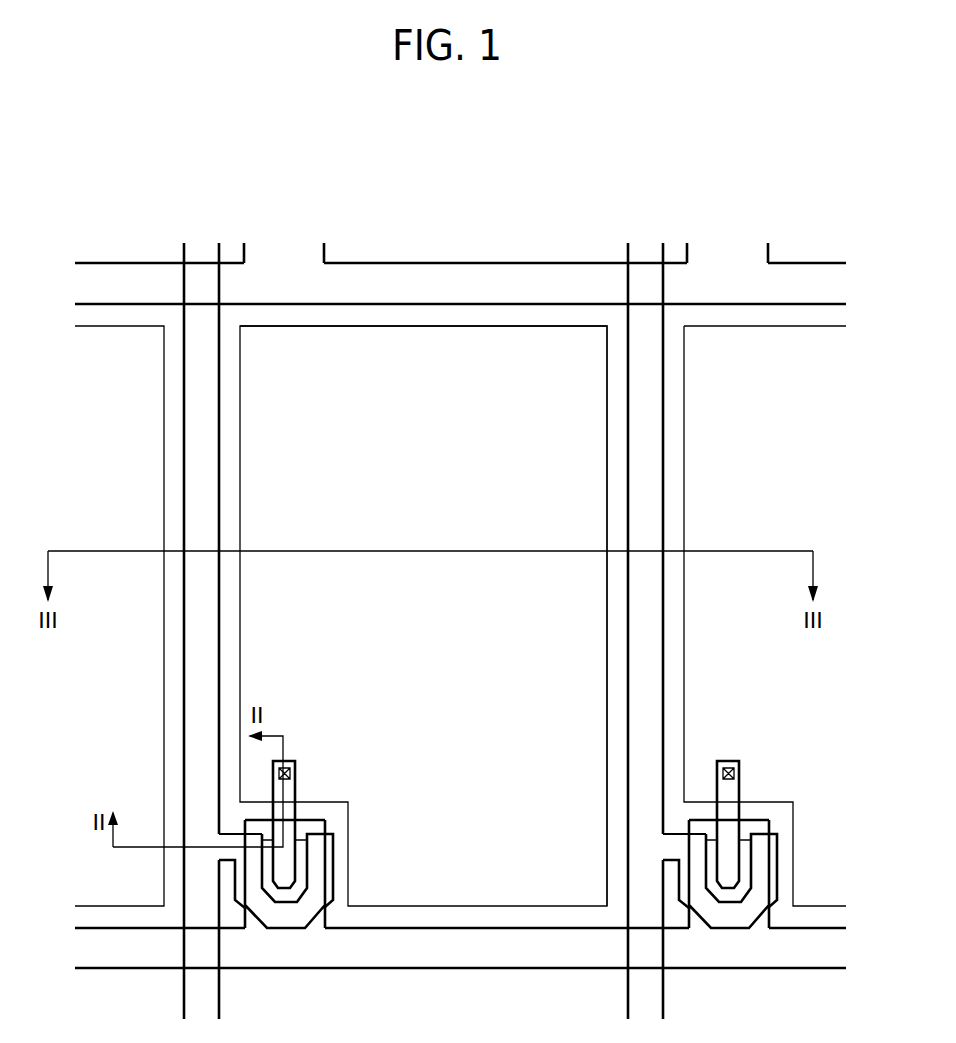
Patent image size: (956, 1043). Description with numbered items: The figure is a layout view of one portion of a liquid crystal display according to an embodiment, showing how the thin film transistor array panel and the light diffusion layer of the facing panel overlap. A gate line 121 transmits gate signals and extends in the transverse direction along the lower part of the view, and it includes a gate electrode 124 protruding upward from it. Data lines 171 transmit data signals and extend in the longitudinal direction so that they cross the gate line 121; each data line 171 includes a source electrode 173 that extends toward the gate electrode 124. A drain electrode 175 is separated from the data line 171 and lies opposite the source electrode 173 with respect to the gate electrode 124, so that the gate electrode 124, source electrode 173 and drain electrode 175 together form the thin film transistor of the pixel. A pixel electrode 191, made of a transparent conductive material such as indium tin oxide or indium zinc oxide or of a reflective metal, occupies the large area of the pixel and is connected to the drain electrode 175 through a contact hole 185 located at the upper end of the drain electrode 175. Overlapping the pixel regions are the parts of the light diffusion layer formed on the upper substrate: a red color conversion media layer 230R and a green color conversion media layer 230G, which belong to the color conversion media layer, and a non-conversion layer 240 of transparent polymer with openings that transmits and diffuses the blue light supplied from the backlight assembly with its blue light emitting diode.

The gate line 121 is at (497, 928).
The gate electrode 124 is at (333, 918).
The data line 171 is at (218, 740).
The source electrode 173 is at (298, 930).
The drain electrode 175 is at (296, 779).
The contact hole 185 is at (291, 770).
The pixel electrode 191 is at (240, 660).
The red color conversion media layer 230R is at (119, 616).
The green color conversion media layer 230G is at (423, 616).
The non-conversion layer 240 is at (765, 616).